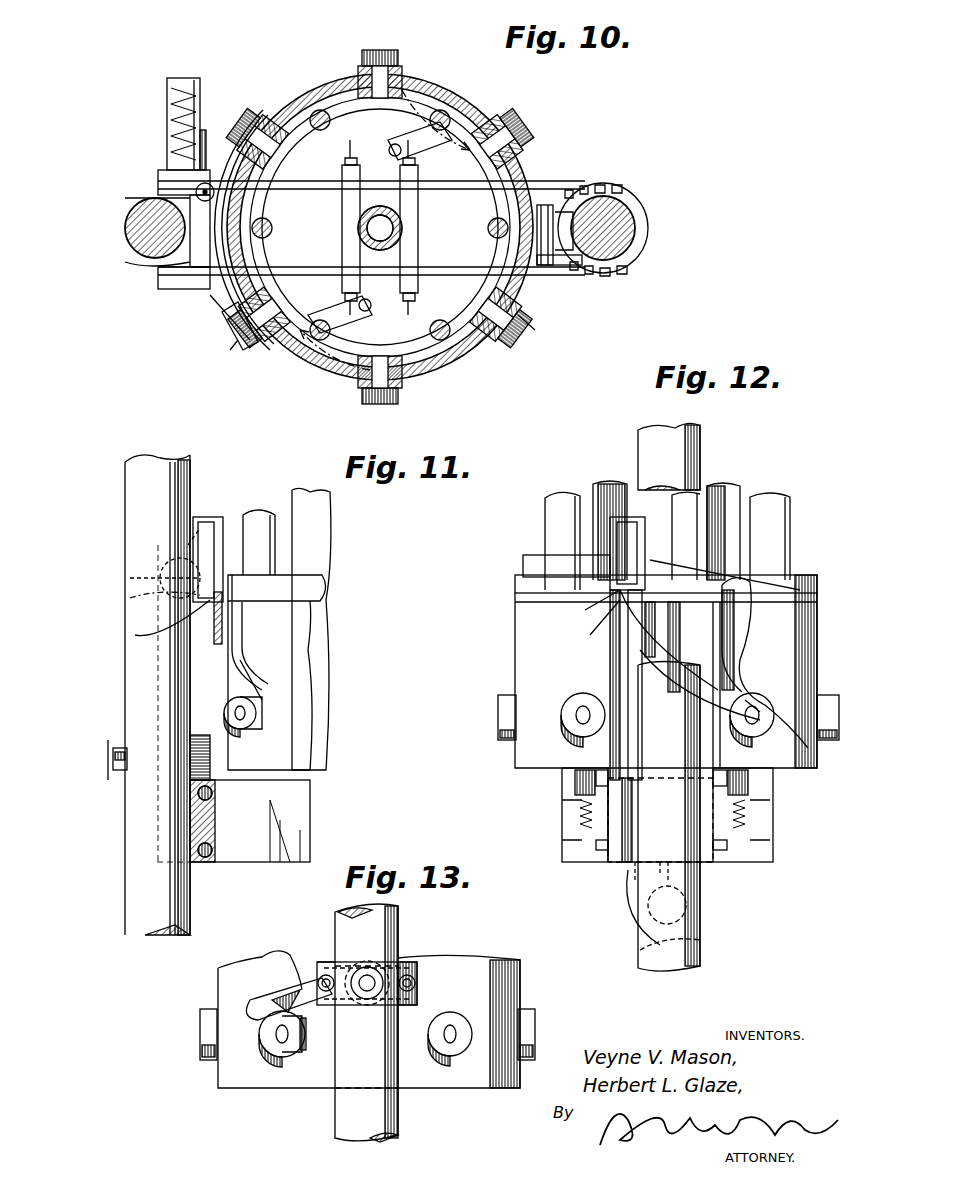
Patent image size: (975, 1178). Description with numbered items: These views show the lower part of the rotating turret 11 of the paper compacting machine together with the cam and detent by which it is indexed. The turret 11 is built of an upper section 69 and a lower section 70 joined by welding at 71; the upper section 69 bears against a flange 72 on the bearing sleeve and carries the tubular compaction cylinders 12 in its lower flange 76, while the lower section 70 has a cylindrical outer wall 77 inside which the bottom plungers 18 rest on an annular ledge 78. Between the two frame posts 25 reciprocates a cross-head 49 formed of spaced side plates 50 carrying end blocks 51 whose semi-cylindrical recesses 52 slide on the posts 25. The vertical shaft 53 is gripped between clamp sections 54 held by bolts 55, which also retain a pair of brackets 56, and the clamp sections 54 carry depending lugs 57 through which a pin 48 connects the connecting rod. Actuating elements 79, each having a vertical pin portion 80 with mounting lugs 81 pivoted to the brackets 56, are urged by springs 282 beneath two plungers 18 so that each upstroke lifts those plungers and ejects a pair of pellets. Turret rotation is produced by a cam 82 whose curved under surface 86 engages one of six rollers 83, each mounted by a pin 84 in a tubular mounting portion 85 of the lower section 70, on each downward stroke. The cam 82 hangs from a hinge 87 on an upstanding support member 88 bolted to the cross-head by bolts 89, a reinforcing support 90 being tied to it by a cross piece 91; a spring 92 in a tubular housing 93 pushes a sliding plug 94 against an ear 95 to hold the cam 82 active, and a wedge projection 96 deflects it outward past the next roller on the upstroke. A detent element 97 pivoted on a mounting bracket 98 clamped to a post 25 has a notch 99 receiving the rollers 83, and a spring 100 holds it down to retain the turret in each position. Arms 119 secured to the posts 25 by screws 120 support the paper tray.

In FIG. 10, the turret 11 is at (480, 345).
In FIG. 11, the turret 11 is at (332, 686).
In FIG. 12, the turret 11 is at (509, 670).
In FIG. 13, the turret 11 is at (529, 980).
In FIG. 11, the compaction cylinders 12 is at (256, 520).
In FIG. 12, the compaction cylinders 12 is at (545, 512).
In FIG. 10, the bottom plungers 18 is at (325, 108).
In FIG. 10, the posts 25 is at (128, 240).
In FIG. 11, the posts 25 is at (125, 500).
In FIG. 12, the posts 25 is at (700, 440).
In FIG. 13, the posts 25 is at (398, 928).
In FIG. 12, the pin 48 is at (640, 950).
In FIG. 10, the cross-head 49 is at (341, 169).
In FIG. 11, the cross-head 49 is at (263, 874).
In FIG. 12, the cross-head 49 is at (585, 842).
In FIG. 10, the side plates 50 is at (535, 181).
In FIG. 11, the side plates 50 is at (310, 804).
In FIG. 12, the side plates 50 is at (700, 825).
In FIG. 10, the blocks 51 is at (170, 277).
In FIG. 11, the blocks 51 is at (216, 810).
In FIG. 12, the blocks 51 is at (630, 862).
In FIG. 10, the semi-cylindrical recess 52 is at (135, 212).
In FIG. 11, the semi-cylindrical recess 52 is at (214, 838).
In FIG. 12, the semi-cylindrical recess 52 is at (692, 870).
In FIG. 10, the vertical shaft 53 is at (418, 243).
In FIG. 10, the clamp sections 54 is at (415, 212).
In FIG. 10, the bolts 55 is at (360, 150).
In FIG. 10, the brackets 56 is at (345, 190).
In FIG. 12, the lugs 57 is at (635, 925).
In FIG. 11, the upper section 69 is at (322, 520).
In FIG. 12, the upper section 69 is at (740, 490).
In FIG. 11, the lower section 70 is at (312, 722).
In FIG. 12, the lower section 70 is at (812, 672).
In FIG. 13, the lower section 70 is at (520, 1080).
In FIG. 11, the weld 71 is at (312, 602).
In FIG. 12, the weld 71 is at (818, 600).
In FIG. 10, the flange 72 is at (427, 106).
In FIG. 11, the lower flange 76 is at (318, 585).
In FIG. 12, the lower flange 76 is at (815, 580).
In FIG. 10, the cylindrical outer wall 77 is at (300, 100).
In FIG. 11, the cylindrical outer wall 77 is at (315, 648).
In FIG. 12, the cylindrical outer wall 77 is at (812, 632).
In FIG. 13, the cylindrical outer wall 77 is at (520, 1000).
In FIG. 10, the annular ledge 78 is at (318, 92).
In FIG. 10, the actuating elements 79 is at (358, 370).
In FIG. 12, the actuating elements 79 is at (573, 831).
In FIG. 10, the pin portion 80 is at (420, 148).
In FIG. 12, the pin portion 80 is at (562, 780).
In FIG. 12, the mounting lugs 81 is at (562, 798).
In FIG. 10, the cam 82 is at (236, 344).
In FIG. 11, the cam 82 is at (270, 660).
In FIG. 12, the cam 82 is at (753, 647).
In FIG. 10, the rollers 83 is at (372, 52).
In FIG. 11, the rollers 83 is at (256, 730).
In FIG. 12, the rollers 83 is at (498, 722).
In FIG. 13, the rollers 83 is at (200, 1028).
In FIG. 10, the pin 84 is at (398, 52).
In FIG. 11, the pin 84 is at (246, 710).
In FIG. 12, the pin 84 is at (578, 705).
In FIG. 13, the pin 84 is at (282, 1045).
In FIG. 10, the tubular mounting portion 85 is at (280, 118).
In FIG. 11, the curved under surface 86 is at (260, 683).
In FIG. 12, the curved under surface 86 is at (748, 680).
In FIG. 11, the hinge 87 is at (205, 522).
In FIG. 12, the hinge 87 is at (640, 540).
In FIG. 10, the support member 88 is at (165, 180).
In FIG. 11, the support member 88 is at (155, 678).
In FIG. 12, the support member 88 is at (610, 650).
In FIG. 11, the bolts 89 is at (214, 852).
In FIG. 12, the bolts 89 is at (602, 772).
In FIG. 10, the reinforcing support 90 is at (162, 289).
In FIG. 11, the reinforcing support 90 is at (130, 598).
In FIG. 12, the reinforcing support 90 is at (700, 700).
In FIG. 10, the cross piece 91 is at (195, 270).
In FIG. 11, the cross piece 91 is at (135, 635).
In FIG. 12, the cross piece 91 is at (690, 600).
In FIG. 10, the spring 92 is at (200, 128).
In FIG. 10, the tubular housing 93 is at (167, 110).
In FIG. 11, the tubular housing 93 is at (175, 565).
In FIG. 12, the tubular housing 93 is at (530, 555).
In FIG. 10, the sliding plug 94 is at (175, 165).
In FIG. 11, the sliding plug 94 is at (165, 575).
In FIG. 12, the sliding plug 94 is at (618, 600).
In FIG. 10, the ear 95 is at (160, 185).
In FIG. 11, the ear 95 is at (130, 578).
In FIG. 12, the ear 95 is at (612, 610).
In FIG. 10, the wedge projection 96 is at (222, 298).
In FIG. 11, the wedge projection 96 is at (240, 590).
In FIG. 12, the wedge projection 96 is at (770, 575).
In FIG. 10, the detent element 97 is at (515, 322).
In FIG. 13, the detent element 97 is at (280, 975).
In FIG. 10, the mounting bracket 98 is at (638, 205).
In FIG. 13, the mounting bracket 98 is at (405, 962).
In FIG. 13, the notch 99 is at (320, 980).
In FIG. 10, the spring 100 is at (548, 266).
In FIG. 13, the spring 100 is at (362, 1010).
In FIG. 11, the arms 119 is at (113, 770).
In FIG. 11, the screws 120 is at (113, 755).
In FIG. 10, the springs 282 is at (400, 120).
In FIG. 12, the springs 282 is at (600, 800).